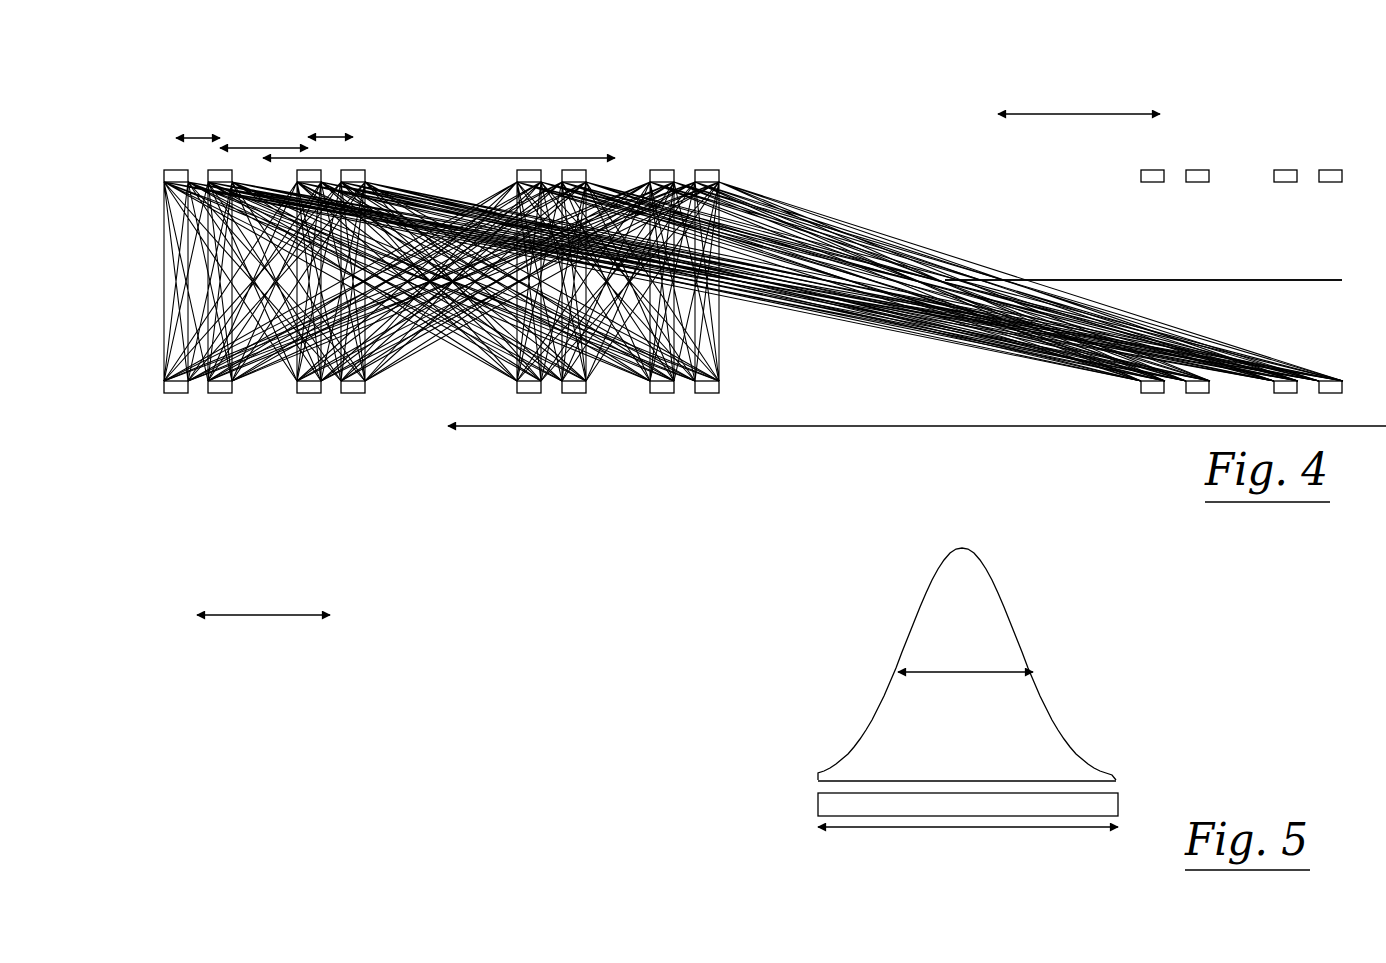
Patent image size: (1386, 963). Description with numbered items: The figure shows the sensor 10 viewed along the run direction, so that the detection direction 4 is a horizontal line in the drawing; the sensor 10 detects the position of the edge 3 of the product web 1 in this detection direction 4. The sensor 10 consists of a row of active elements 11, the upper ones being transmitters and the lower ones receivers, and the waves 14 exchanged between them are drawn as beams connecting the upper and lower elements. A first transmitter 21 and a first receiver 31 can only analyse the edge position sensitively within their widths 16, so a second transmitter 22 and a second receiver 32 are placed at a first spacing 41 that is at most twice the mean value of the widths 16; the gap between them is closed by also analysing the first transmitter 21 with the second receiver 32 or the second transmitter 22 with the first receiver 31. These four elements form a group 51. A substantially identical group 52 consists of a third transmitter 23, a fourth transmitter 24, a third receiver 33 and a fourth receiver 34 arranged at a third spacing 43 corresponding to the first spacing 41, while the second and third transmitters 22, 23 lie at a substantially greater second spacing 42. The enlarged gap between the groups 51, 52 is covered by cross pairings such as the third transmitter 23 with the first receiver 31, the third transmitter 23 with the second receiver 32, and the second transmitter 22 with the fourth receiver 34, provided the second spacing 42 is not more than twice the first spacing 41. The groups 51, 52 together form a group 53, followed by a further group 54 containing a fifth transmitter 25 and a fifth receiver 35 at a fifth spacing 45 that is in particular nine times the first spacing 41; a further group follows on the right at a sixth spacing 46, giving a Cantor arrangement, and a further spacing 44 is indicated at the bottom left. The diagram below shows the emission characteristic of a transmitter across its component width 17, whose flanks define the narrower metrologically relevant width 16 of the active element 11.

In FIG. 4, the product web 1 is at (1000, 280).
In FIG. 4, the edge 3 is at (943, 278).
In FIG. 4, the detection direction 4 is at (1040, 113).
In FIG. 4, the sensor 10 is at (1270, 130).
In FIG. 5, the active elements 11 is at (897, 805).
In FIG. 4, the waves 14 is at (400, 185).
In FIG. 5, the widths 16 is at (945, 670).
In FIG. 5, the component width 17 is at (897, 827).
In FIG. 4, the first transmitter 21 is at (176, 170).
In FIG. 4, the second transmitter 22 is at (217, 170).
In FIG. 4, the third transmitter 23 is at (306, 170).
In FIG. 4, the fourth transmitter 24 is at (353, 170).
In FIG. 4, the fifth transmitter 25 is at (528, 170).
In FIG. 4, the first receiver 31 is at (176, 393).
In FIG. 4, the second receiver 32 is at (220, 393).
In FIG. 4, the third receiver 33 is at (309, 393).
In FIG. 4, the fourth receiver 34 is at (353, 393).
In FIG. 4, the fifth receiver 35 is at (528, 393).
In FIG. 4, the first spacing 41 is at (212, 137).
In FIG. 4, the second spacing 42 is at (278, 147).
In FIG. 4, the third spacing 43 is at (345, 136).
In FIG. 4, the detector pitch 44 is at (284, 612).
In FIG. 4, the fifth spacing 45 is at (478, 157).
In FIG. 4, the sixth spacing 46 is at (965, 426).
In FIG. 4, the group 51 is at (198, 412).
In FIG. 4, the group 52 is at (331, 412).
In FIG. 4, the group 53 is at (265, 490).
In FIG. 4, the further group 54 is at (631, 483).